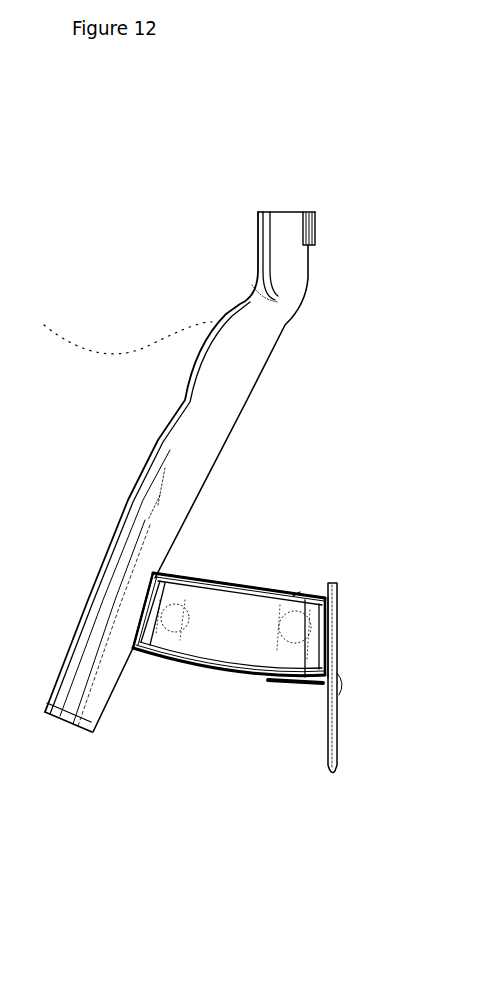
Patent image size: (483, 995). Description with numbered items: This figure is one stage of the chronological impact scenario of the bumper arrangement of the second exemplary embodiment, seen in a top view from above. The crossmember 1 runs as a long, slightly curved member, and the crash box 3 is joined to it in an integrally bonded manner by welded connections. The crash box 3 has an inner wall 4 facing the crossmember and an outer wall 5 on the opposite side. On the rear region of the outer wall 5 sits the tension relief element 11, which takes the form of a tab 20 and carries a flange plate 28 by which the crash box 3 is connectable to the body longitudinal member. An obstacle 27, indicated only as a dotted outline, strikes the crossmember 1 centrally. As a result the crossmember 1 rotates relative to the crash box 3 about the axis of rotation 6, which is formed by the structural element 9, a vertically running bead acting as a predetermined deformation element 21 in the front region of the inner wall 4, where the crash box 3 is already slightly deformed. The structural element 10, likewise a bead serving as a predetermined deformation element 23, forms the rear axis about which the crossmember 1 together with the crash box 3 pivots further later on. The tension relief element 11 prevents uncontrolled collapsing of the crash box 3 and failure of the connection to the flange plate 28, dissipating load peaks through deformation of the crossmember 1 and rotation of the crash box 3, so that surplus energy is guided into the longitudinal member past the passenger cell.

The crossmember 1 is at (183, 430).
The crash box 3 is at (243, 632).
The inner wall 4 is at (238, 583).
The outer wall 5 is at (210, 660).
The axis of rotation 6 is at (278, 471).
The structural element 9 is at (278, 471).
The predetermined deformation element 21 is at (163, 575).
The structural element 10 is at (363, 532).
The predetermined deformation element 23 is at (300, 595).
The tension relief element 11 is at (310, 779).
The tab 20 is at (310, 683).
The obstacle 27 is at (147, 333).
The flange plate 28 is at (338, 713).